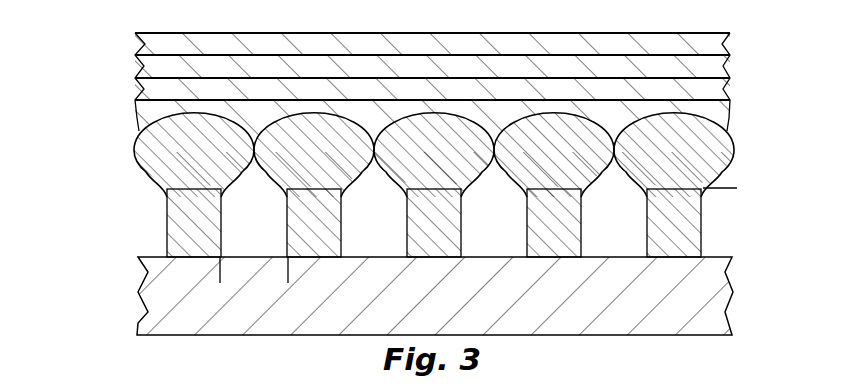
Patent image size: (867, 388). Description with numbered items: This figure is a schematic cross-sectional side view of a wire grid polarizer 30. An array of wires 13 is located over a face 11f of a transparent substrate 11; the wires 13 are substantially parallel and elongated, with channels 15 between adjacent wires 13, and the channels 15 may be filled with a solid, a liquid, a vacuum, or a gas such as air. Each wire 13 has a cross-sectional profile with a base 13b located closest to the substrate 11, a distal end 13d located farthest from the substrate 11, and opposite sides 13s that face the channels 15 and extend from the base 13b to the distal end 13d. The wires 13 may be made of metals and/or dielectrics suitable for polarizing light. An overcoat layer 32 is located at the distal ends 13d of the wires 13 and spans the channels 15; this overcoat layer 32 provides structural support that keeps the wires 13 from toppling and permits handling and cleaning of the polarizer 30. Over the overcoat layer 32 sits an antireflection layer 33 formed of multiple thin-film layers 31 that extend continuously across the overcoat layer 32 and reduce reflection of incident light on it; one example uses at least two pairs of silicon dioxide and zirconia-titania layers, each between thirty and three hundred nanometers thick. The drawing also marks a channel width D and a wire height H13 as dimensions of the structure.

The wire grid polarizer 30 is at (68, 283).
The antireflection layer 33 is at (389, 115).
The thin-film layers 31 is at (487, 55).
The overcoat layer 32 is at (434, 155).
The wires 13 is at (434, 223).
The distal end 13d is at (166, 187).
The base 13b is at (170, 259).
The sides 13s is at (527, 238).
The channels 15 is at (243, 234).
The transparent substrate 11 is at (422, 306).
The face 11f is at (157, 257).
The gap width dimension D is at (231, 270).
The pillar height dimension H13 is at (718, 199).